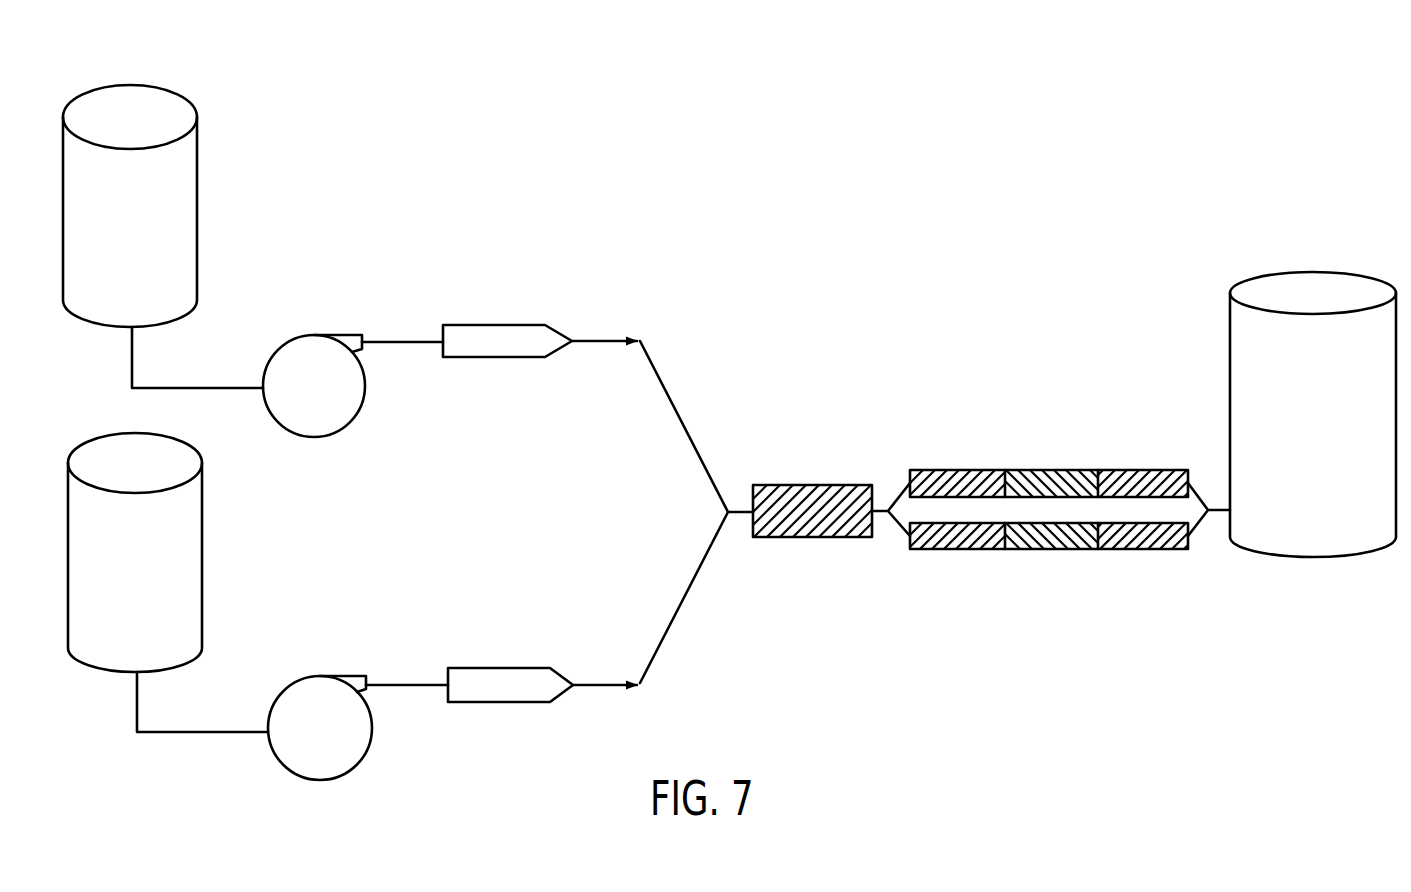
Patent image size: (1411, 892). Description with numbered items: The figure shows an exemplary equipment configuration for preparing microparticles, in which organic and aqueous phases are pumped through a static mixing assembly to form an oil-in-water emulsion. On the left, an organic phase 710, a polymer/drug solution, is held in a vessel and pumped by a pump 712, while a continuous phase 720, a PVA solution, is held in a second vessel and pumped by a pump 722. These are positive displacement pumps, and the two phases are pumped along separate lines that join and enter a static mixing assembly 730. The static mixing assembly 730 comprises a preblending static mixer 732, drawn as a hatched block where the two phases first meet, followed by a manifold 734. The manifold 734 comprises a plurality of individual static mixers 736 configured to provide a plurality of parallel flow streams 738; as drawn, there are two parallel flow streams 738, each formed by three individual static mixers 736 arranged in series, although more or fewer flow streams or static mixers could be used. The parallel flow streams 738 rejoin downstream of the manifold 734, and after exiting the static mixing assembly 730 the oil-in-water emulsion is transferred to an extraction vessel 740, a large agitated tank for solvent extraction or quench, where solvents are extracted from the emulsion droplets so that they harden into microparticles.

The organic phase 710 is at (197, 190).
The pump 712 is at (392, 298).
The continuous phase 720 is at (203, 535).
The pump 722 is at (395, 643).
The static mixing assembly 730 is at (966, 491).
The preblending static mixer 732 is at (805, 537).
The manifold 734 is at (1026, 501).
The individual static mixers 736 is at (1140, 470).
The parallel flow streams 738 is at (908, 480).
The extraction vessel 740 is at (1230, 318).